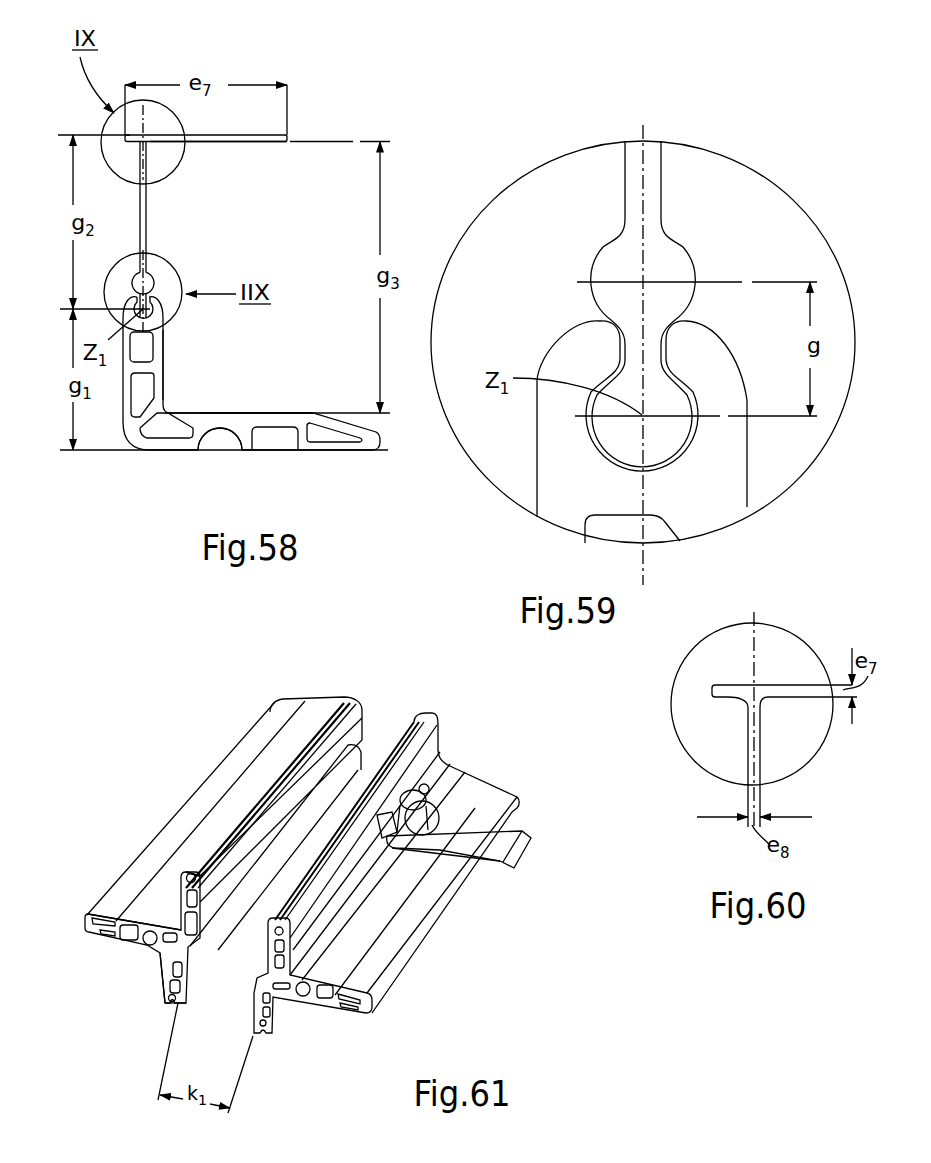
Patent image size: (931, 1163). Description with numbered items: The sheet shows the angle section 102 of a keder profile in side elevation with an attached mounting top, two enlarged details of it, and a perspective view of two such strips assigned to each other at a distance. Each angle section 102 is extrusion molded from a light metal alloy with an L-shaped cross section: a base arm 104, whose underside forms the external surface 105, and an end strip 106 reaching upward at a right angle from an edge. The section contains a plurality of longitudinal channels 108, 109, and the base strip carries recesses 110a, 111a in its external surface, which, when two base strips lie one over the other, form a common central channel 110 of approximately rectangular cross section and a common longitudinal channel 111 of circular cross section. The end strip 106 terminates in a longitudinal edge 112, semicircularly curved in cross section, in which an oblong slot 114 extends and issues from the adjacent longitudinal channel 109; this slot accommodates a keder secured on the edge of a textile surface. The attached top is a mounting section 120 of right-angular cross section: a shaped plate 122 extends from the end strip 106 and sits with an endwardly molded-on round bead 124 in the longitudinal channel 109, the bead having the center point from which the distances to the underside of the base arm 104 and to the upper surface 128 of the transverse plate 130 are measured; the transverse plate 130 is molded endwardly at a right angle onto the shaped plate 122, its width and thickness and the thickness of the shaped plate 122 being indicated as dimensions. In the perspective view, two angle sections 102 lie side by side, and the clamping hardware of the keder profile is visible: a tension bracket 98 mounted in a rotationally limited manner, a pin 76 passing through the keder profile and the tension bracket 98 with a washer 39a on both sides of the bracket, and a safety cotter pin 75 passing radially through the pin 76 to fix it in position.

In FIG. 58, the angle section 102 is at (235, 418).
In FIG. 59, the angle section 102 is at (650, 426).
In FIG. 61, the angle section 102 is at (316, 872).
In FIG. 58, the base arm 104 is at (298, 410).
In FIG. 61, the base arm 104 is at (110, 916).
In FIG. 58, the external surface 105 is at (334, 452).
In FIG. 61, the external surface 105 is at (226, 964).
In FIG. 58, the end strip 106 is at (172, 340).
In FIG. 61, the end strip 106 is at (184, 993).
In FIG. 58, the longitudinal channel 108 is at (168, 425).
In FIG. 59, the longitudinal channel 108 is at (617, 528).
In FIG. 61, the longitudinal channel 108 is at (183, 900).
In FIG. 58, the longitudinal channel 109 is at (143, 307).
In FIG. 59, the longitudinal channel 109 is at (590, 437).
In FIG. 61, the longitudinal channel 109 is at (279, 924).
In FIG. 61, the central channel 110 is at (130, 913).
In FIG. 58, the recess 110a is at (277, 432).
In FIG. 61, the longitudinal channel 111 is at (148, 946).
In FIG. 58, the recess 111a is at (218, 441).
In FIG. 58, the longitudinal edge 112 is at (156, 307).
In FIG. 59, the longitudinal edge 112 is at (576, 333).
In FIG. 61, the longitudinal edge 112 is at (310, 732).
In FIG. 58, the oblong slot 114 is at (130, 307).
In FIG. 59, the oblong slot 114 is at (620, 350).
In FIG. 61, the oblong slot 114 is at (420, 717).
In FIG. 58, the mounting section 120 is at (219, 205).
In FIG. 59, the mounting section 120 is at (586, 319).
In FIG. 60, the mounting section 120 is at (746, 705).
In FIG. 58, the shaped plate 122 is at (143, 207).
In FIG. 59, the shaped plate 122 is at (632, 170).
In FIG. 60, the shaped plate 122 is at (745, 763).
In FIG. 58, the round bead 124 is at (143, 295).
In FIG. 59, the round bead 124 is at (617, 432).
In FIG. 58, the upper surface 128 is at (236, 130).
In FIG. 60, the upper surface 128 is at (733, 678).
In FIG. 58, the transverse plate 130 is at (246, 144).
In FIG. 60, the transverse plate 130 is at (820, 700).
In FIG. 61, the safety cotter pin 75 is at (427, 792).
In FIG. 61, the pin 76 is at (428, 803).
In FIG. 61, the washer 39a is at (484, 782).
In FIG. 61, the tension bracket 98 is at (505, 852).